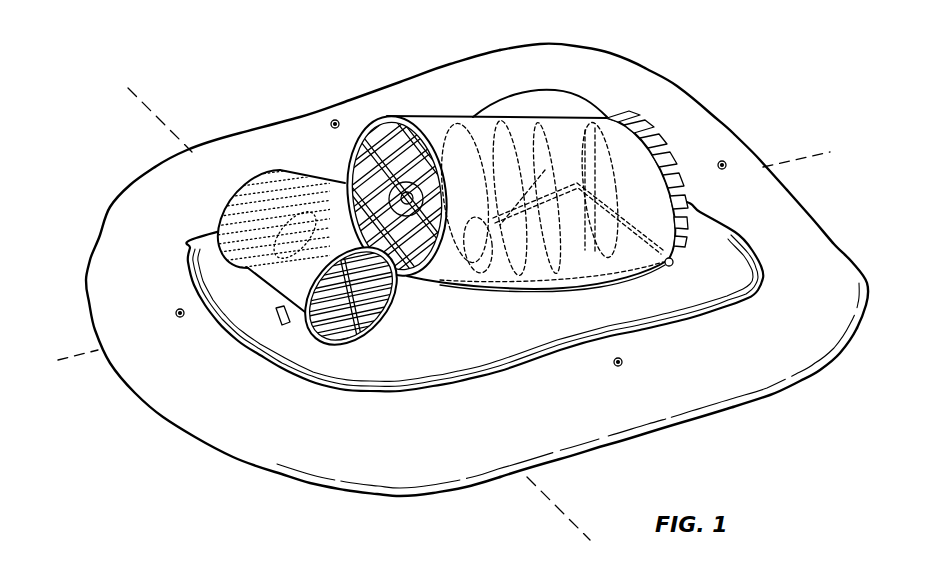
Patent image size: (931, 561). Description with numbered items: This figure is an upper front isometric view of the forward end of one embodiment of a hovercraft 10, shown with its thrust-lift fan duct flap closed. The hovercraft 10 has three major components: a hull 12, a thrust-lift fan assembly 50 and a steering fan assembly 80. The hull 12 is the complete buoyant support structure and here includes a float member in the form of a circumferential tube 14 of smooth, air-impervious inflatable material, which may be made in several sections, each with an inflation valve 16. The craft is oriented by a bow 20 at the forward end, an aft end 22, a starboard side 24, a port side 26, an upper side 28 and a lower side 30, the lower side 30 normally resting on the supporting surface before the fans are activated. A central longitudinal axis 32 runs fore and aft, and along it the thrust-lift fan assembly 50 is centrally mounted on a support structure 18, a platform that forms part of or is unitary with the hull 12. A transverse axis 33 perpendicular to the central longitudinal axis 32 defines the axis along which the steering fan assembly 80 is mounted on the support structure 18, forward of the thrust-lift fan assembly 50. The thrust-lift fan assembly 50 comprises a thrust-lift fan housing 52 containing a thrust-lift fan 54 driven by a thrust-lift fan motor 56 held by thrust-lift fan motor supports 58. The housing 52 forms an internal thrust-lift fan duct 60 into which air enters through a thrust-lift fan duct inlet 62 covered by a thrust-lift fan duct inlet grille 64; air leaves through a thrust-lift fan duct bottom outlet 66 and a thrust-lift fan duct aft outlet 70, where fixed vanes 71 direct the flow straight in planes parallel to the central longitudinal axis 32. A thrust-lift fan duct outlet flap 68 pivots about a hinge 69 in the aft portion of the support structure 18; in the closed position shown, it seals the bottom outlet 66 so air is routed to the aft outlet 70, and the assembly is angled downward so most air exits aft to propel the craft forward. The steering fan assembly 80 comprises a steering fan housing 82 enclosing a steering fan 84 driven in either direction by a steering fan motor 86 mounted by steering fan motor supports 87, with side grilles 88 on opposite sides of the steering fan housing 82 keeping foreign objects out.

The hovercraft 10 is at (160, 45).
The hull 12 is at (776, 211).
The circumferential tube 14 is at (827, 263).
The inflation valve 16 is at (331, 118).
The support structure 18 is at (370, 367).
The bow 20 is at (161, 420).
The aft end 22 is at (812, 205).
The starboard side 24 is at (292, 104).
The port side 26 is at (636, 442).
The upper side 28 is at (582, 46).
The lower side 30 is at (726, 414).
The central longitudinal axis 32 is at (82, 352).
The transverse axis 33 is at (140, 108).
The thrust-lift fan assembly 50 is at (418, 104).
The thrust-lift fan housing 52 is at (572, 126).
The thrust-lift fan 54 is at (508, 112).
The thrust-lift fan motor 56 is at (463, 286).
The thrust-lift fan motor supports 58 is at (446, 116).
The thrust-lift fan duct 60 is at (421, 282).
The thrust-lift fan duct inlet 62 is at (366, 133).
The thrust-lift fan duct inlet grille 64 is at (311, 173).
The thrust-lift fan duct bottom outlet 66 is at (543, 186).
The thrust-lift fan duct outlet flap 68 is at (547, 290).
The hinge 69 is at (675, 268).
The thrust-lift fan duct aft outlet 70 is at (618, 224).
The fixed vanes 71 is at (670, 118).
The steering fan assembly 80 is at (251, 172).
The steering fan housing 82 is at (217, 230).
The steering fan 84 is at (327, 328).
The steering fan motor 86 is at (223, 237).
The steering fan motor supports 87 is at (268, 308).
The side grilles 88 is at (235, 195).